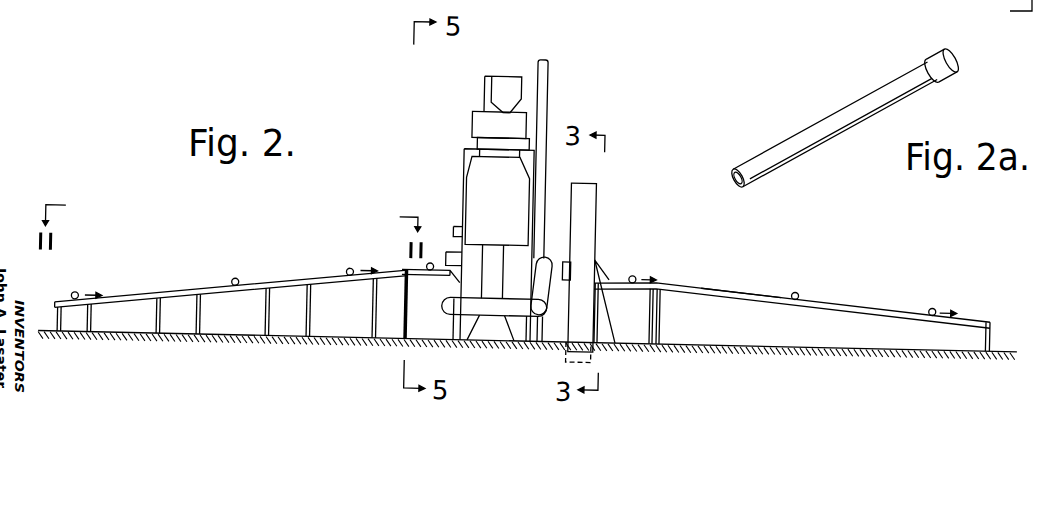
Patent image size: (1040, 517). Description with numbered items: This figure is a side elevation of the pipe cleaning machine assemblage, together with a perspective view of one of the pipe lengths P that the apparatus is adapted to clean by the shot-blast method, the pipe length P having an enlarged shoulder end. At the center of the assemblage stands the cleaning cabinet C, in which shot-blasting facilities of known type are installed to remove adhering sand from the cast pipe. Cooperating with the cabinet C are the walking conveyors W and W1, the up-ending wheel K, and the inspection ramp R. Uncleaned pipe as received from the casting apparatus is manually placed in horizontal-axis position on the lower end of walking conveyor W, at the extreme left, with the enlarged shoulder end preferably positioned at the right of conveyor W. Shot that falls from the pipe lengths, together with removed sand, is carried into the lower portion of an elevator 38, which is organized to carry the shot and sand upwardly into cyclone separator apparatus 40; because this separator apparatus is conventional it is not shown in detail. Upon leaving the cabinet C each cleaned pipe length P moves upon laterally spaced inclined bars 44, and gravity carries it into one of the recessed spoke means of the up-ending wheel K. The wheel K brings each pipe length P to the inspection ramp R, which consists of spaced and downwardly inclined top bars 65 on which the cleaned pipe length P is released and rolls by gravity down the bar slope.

In FIG. 2, the cyclone separator apparatus 40 is at (504, 88).
In FIG. 2, the elevator 38 is at (543, 104).
In FIG. 2, the cleaning cabinet C is at (459, 178).
In FIG. 2, the up-ending wheel K is at (594, 219).
In FIG. 2, the inclined bars 44 is at (561, 264).
In FIG. 2, the walking conveyor W is at (186, 292).
In FIG. 2, the walking conveyor W1 is at (436, 266).
In FIG. 2, the inspection ramp R is at (692, 284).
In FIG. 2, the top bars 65 is at (734, 294).
In FIG. 2, the pipe length P is at (74, 302).
In FIG. 2A, the pipe length P is at (833, 112).